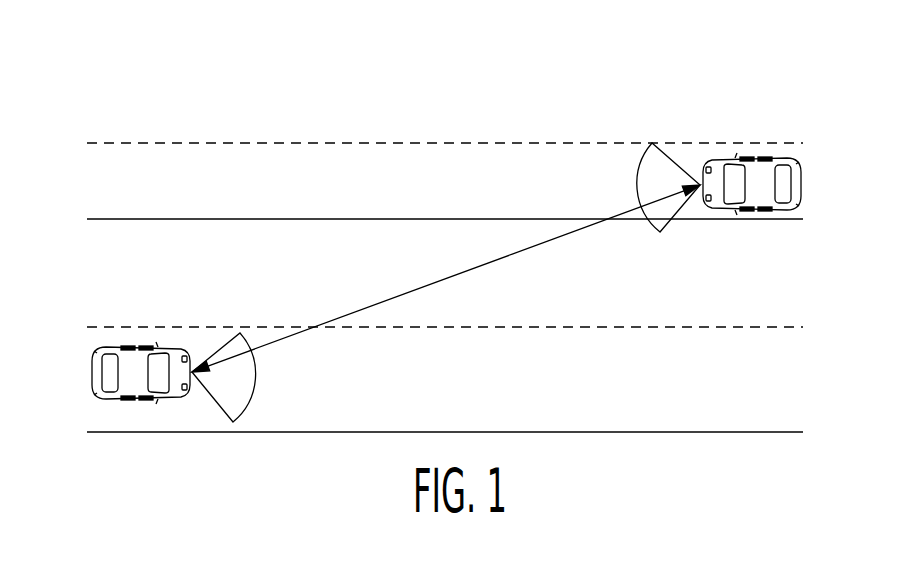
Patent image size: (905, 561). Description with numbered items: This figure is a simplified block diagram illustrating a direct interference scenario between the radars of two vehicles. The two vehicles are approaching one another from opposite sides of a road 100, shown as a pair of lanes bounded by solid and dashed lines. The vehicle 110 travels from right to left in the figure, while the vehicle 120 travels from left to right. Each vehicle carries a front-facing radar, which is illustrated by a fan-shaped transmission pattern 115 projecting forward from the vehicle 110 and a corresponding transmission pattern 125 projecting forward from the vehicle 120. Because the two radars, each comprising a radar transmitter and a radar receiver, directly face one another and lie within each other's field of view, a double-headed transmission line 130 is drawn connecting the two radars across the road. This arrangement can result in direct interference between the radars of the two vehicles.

The road 100 is at (482, 39).
The vehicle 110 is at (800, 178).
The transmission pattern 115 is at (650, 167).
The vehicle 120 is at (92, 373).
The transmission pattern 125 is at (235, 392).
The transmission line 130 is at (480, 265).